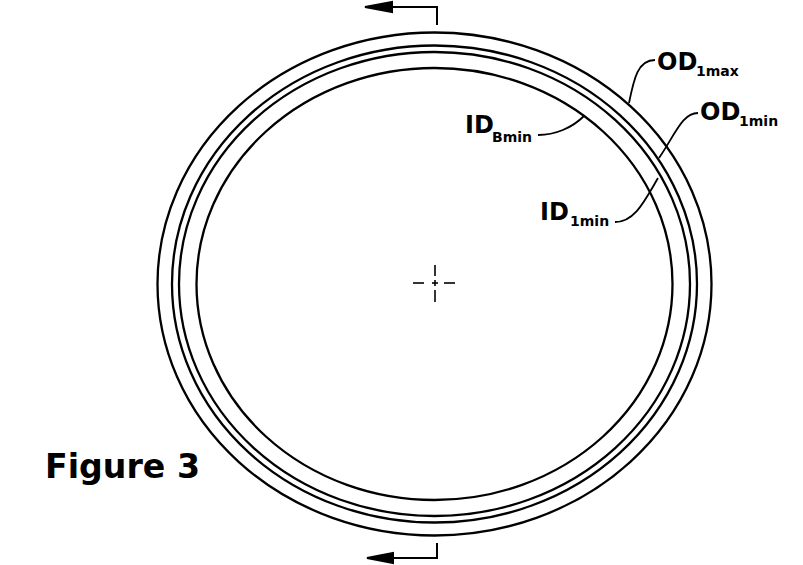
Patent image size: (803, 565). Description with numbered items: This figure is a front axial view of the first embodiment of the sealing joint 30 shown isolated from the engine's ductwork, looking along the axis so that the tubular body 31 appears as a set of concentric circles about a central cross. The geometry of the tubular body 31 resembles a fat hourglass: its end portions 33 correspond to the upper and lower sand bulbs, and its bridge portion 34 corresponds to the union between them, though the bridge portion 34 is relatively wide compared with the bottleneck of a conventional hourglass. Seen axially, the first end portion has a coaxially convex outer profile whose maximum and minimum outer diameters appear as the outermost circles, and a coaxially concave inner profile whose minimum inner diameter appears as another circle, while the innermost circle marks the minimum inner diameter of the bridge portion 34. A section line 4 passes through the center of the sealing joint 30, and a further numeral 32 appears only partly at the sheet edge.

The ring assembly 30 is at (195, 95).
The outer ring 31 is at (185, 135).
The intermediate ring 33 is at (625, 450).
The inner ring 34 is at (608, 462).
The section line 4- 4 is at (392, 282).
The ring element 32 is at (117, 562).